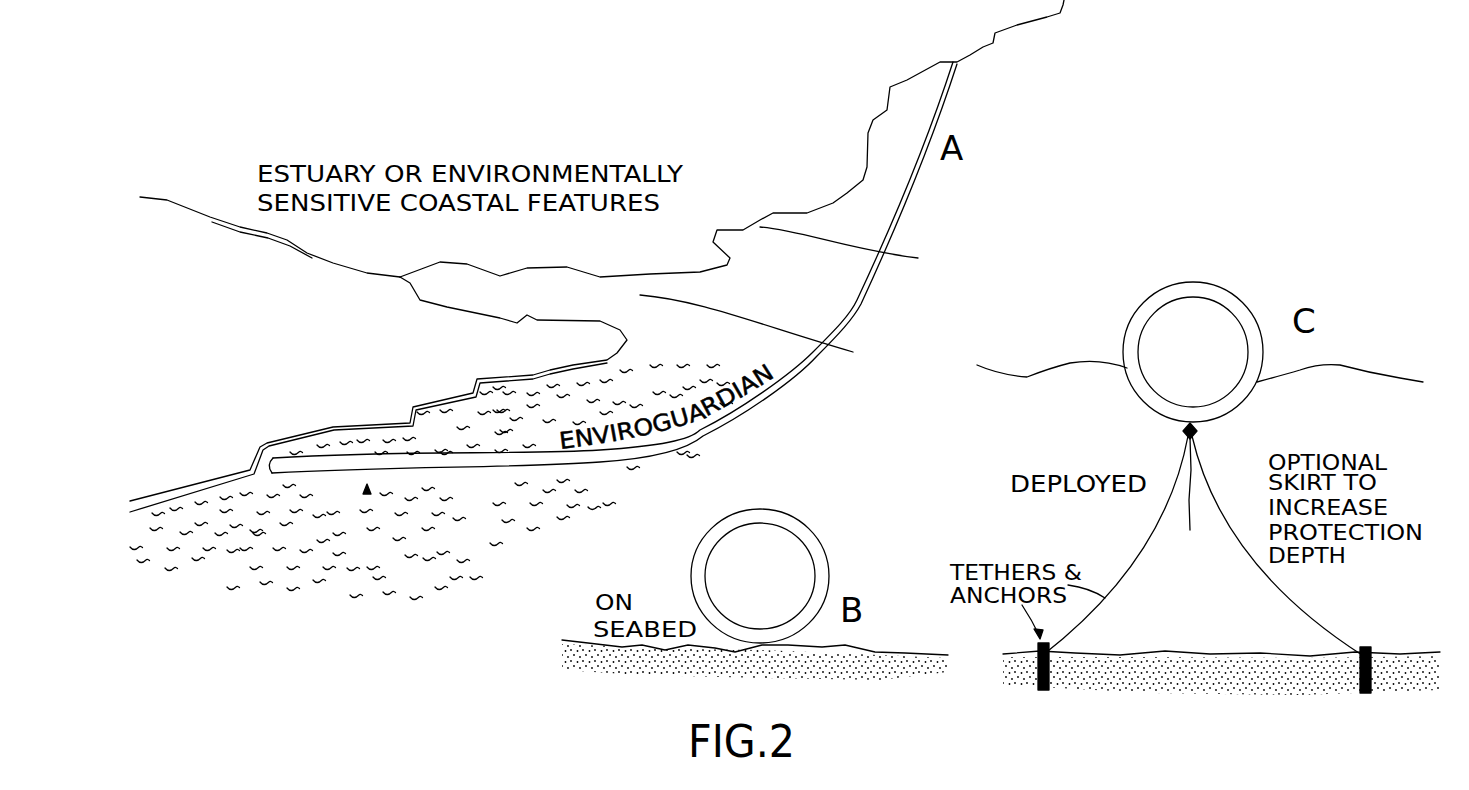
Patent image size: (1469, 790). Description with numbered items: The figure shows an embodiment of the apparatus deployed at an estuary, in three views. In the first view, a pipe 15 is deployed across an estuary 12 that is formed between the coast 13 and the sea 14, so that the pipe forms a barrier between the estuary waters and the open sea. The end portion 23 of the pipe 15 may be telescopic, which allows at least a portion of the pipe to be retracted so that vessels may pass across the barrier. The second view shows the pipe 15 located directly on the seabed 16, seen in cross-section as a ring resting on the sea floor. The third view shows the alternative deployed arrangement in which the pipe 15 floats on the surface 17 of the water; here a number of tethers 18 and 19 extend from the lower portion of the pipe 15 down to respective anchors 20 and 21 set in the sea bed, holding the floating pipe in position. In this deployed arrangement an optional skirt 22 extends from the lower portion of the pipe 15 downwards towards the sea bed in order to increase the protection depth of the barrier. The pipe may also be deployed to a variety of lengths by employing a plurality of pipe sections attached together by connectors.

The estuary 12 is at (763, 332).
The coast 13 is at (853, 251).
The sea 14 is at (458, 518).
The pipe 15 is at (700, 433).
The seabed 16 is at (857, 665).
The surface 17 is at (1067, 387).
The tether 18 is at (1137, 558).
The tether 19 is at (1303, 612).
The anchor 20 is at (1038, 673).
The anchor 21 is at (1363, 690).
The optional skirt 22 is at (1187, 523).
The end portion 23 is at (367, 490).